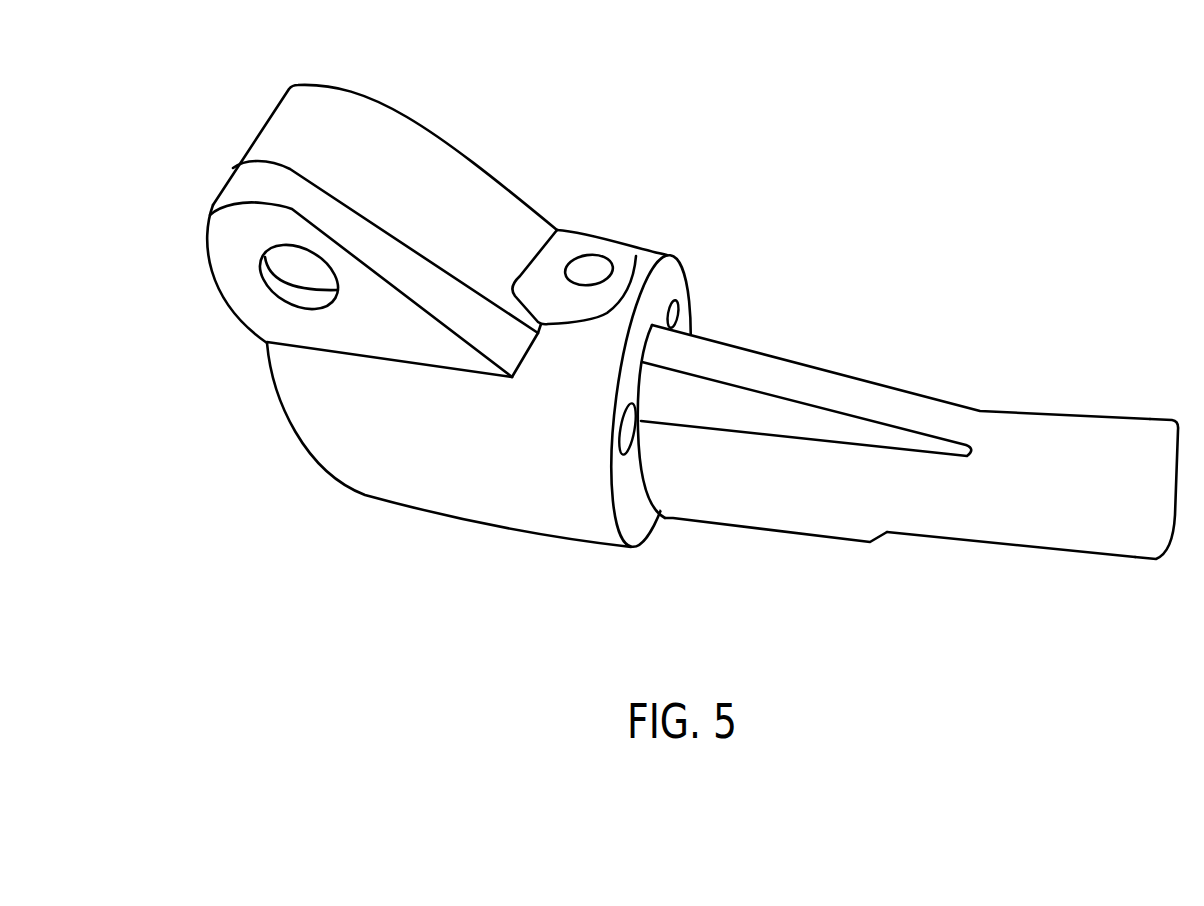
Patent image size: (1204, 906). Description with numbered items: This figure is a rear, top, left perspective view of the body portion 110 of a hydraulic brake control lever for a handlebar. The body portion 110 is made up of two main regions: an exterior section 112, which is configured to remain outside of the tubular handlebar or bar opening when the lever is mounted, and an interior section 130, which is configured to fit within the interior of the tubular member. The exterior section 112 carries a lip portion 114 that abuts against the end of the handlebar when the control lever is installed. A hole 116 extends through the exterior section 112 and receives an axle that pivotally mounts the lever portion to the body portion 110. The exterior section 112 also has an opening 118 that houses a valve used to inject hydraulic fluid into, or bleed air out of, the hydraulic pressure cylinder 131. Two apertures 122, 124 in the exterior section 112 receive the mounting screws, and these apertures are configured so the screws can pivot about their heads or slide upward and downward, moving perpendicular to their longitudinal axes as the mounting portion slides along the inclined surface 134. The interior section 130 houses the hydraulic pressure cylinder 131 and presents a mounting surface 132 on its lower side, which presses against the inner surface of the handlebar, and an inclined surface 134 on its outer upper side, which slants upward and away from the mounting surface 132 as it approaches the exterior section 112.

The body portion 110 is at (683, 366).
The exterior section 112 is at (352, 500).
The lip portion 114 is at (650, 539).
The hole 116 is at (262, 279).
The opening 118 is at (590, 255).
The aperture 122 is at (680, 306).
The aperture 124 is at (620, 428).
The interior section 130 is at (908, 472).
The hydraulic pressure cylinder 131 is at (1080, 554).
The mounting surface 132 is at (817, 538).
The inclined surface 134 is at (815, 385).